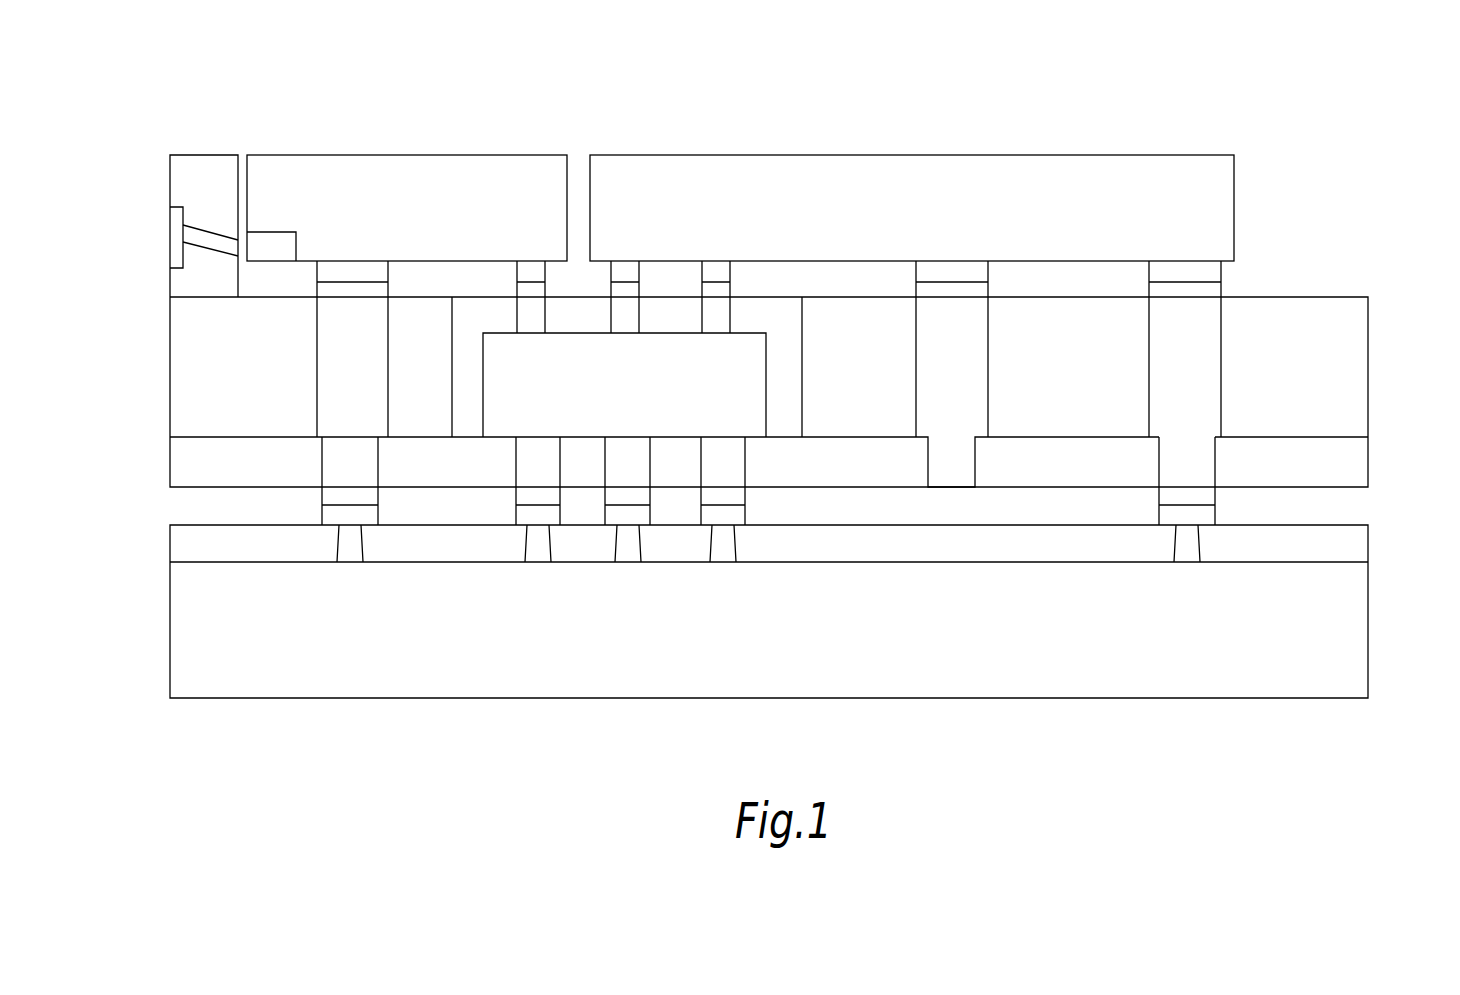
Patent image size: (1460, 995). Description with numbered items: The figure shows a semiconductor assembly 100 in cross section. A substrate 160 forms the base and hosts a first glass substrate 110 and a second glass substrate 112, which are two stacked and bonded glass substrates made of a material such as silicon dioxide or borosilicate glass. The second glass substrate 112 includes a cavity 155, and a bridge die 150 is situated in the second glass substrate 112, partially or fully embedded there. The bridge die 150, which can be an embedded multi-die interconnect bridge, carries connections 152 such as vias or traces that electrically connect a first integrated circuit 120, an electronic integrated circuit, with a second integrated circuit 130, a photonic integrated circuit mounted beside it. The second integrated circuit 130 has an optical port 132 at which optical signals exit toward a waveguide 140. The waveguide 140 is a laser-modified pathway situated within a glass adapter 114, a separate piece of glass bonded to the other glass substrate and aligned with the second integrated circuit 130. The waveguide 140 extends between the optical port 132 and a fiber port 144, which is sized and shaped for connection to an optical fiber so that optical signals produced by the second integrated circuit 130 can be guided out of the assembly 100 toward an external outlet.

The semiconductor assembly 100 is at (1370, 93).
The first glass substrate 110 is at (187, 462).
The second glass substrate 112 is at (187, 360).
The glass adapter 114 is at (188, 183).
The first integrated circuit 120 is at (911, 155).
The second integrated circuit 130 is at (408, 155).
The optical port 132 is at (284, 232).
The waveguide 140 is at (214, 238).
The fiber port 144 is at (176, 253).
The bridge die 150 is at (557, 400).
The connections 152 is at (727, 312).
The cavity 155 is at (790, 367).
The substrate 160 is at (1350, 620).